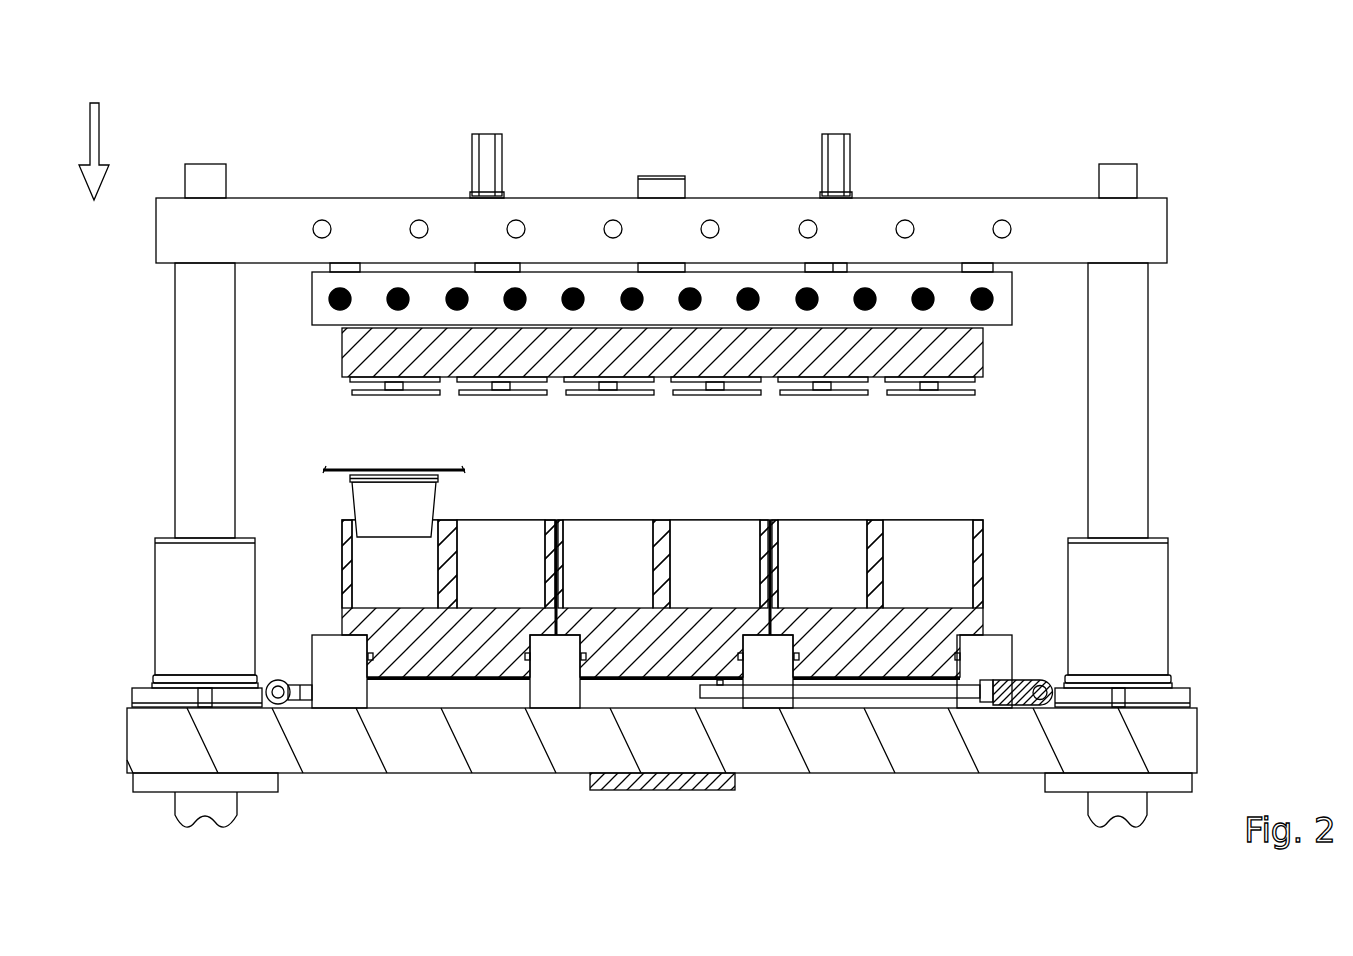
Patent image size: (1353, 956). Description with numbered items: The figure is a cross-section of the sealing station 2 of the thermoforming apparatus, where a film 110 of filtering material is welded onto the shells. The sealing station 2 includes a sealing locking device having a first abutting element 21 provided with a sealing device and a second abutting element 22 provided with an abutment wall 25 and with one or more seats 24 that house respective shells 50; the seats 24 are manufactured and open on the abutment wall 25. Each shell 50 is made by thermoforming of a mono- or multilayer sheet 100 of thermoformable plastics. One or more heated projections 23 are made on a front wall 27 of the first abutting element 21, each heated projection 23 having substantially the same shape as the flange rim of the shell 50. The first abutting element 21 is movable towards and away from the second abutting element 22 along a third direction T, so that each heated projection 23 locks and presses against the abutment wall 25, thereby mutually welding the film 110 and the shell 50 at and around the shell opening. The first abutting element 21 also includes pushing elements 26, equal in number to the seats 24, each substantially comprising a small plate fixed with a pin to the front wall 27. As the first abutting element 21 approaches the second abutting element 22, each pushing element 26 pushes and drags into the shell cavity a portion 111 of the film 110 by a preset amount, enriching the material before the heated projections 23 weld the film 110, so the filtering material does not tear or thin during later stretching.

The sealing station 2 is at (228, 108).
The first abutting element 21 is at (430, 343).
The second abutting element 22 is at (607, 655).
The heated projection 23 is at (340, 387).
The seat 24 is at (550, 565).
The abutment wall 25 is at (762, 520).
The pushing element 26 is at (365, 395).
The front wall 27 is at (982, 378).
The shell 50 is at (404, 494).
The sheet 100 is at (455, 476).
The film 110 is at (458, 470).
The portion of the film 111 is at (397, 474).